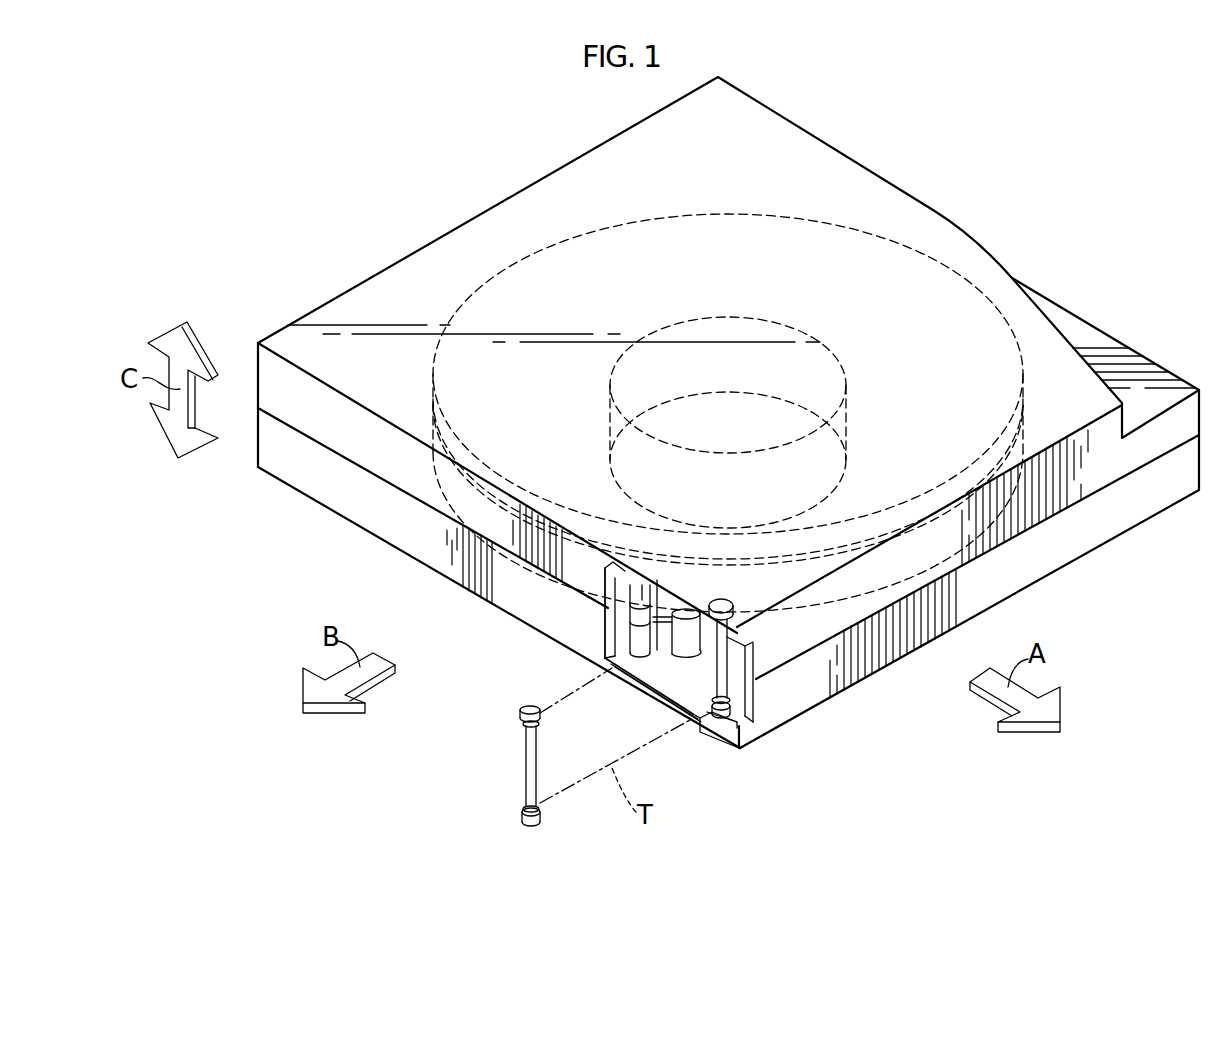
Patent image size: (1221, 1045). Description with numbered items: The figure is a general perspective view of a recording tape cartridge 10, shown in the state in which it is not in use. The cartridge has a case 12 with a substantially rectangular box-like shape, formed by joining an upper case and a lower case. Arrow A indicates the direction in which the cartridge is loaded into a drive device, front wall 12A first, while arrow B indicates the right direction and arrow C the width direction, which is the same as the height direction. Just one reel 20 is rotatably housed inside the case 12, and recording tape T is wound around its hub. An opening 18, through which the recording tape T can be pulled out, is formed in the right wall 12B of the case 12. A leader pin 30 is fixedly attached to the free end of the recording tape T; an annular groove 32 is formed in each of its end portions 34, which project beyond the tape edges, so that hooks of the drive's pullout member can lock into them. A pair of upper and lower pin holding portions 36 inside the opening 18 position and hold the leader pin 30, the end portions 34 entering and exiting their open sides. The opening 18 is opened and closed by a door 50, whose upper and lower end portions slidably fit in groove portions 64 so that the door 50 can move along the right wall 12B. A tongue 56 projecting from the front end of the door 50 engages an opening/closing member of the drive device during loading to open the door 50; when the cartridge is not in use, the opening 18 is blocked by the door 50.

The recording tape cartridge 10 is at (962, 171).
The case 12 is at (1088, 306).
The front wall 12A is at (1015, 570).
The right wall 12B is at (370, 518).
The opening 18 is at (605, 660).
The reel 20 is at (728, 213).
The leader pin 30 is at (520, 770).
The annular groove 32 is at (525, 728).
The end portions 34 is at (520, 708).
The pin holding portions 36 is at (690, 656).
The door 50 is at (573, 620).
The tongue 56 is at (612, 635).
The groove portions 64 is at (707, 600).